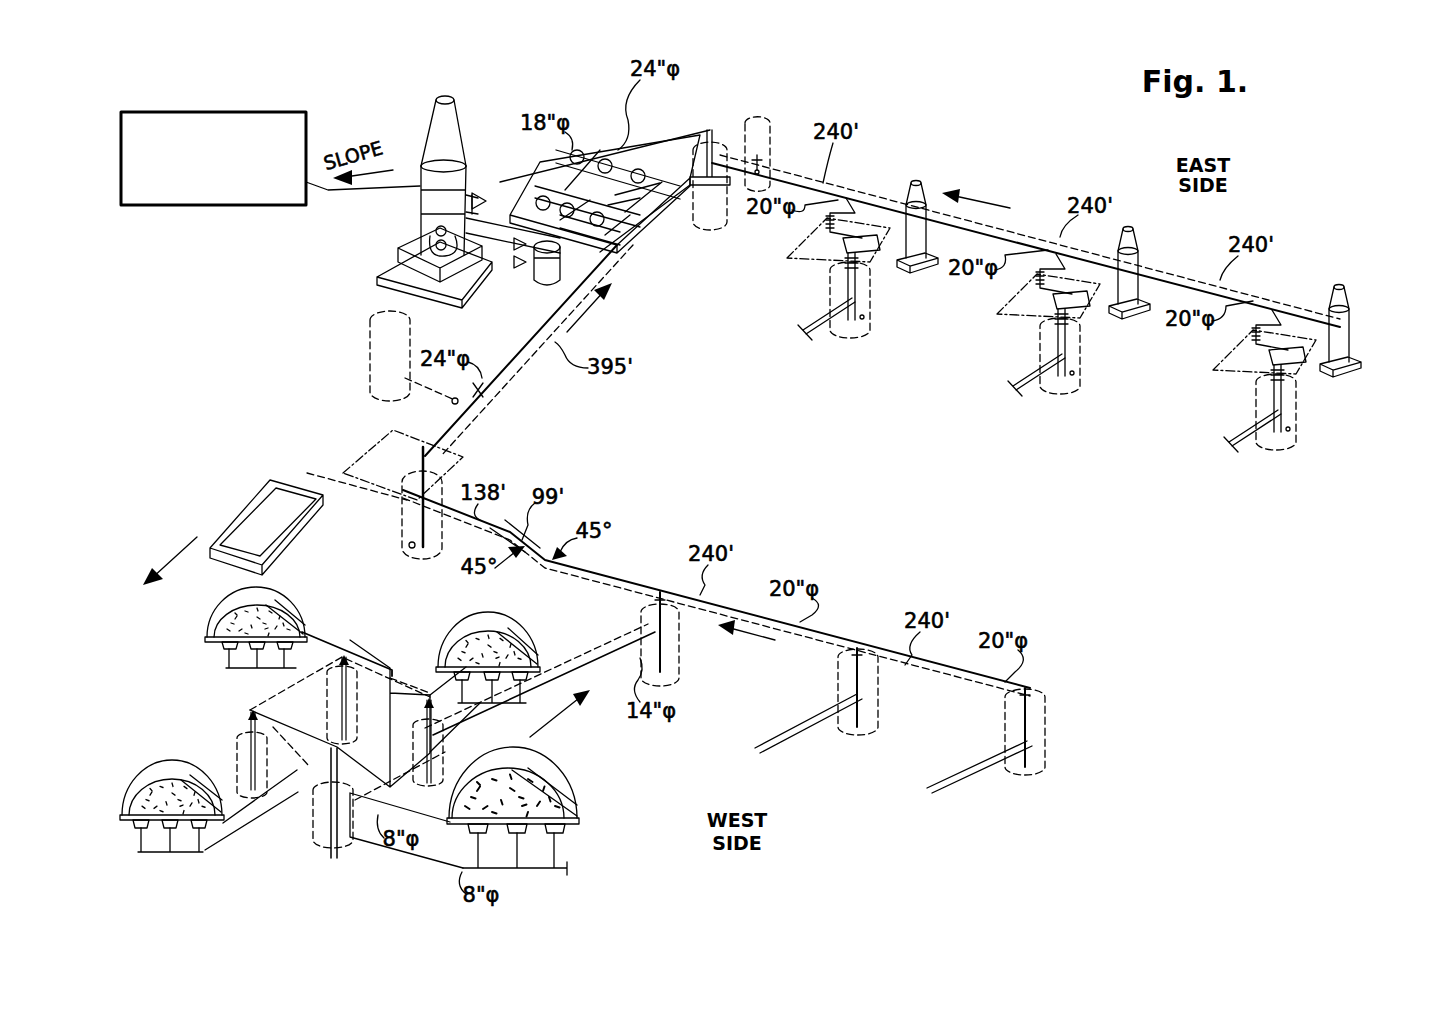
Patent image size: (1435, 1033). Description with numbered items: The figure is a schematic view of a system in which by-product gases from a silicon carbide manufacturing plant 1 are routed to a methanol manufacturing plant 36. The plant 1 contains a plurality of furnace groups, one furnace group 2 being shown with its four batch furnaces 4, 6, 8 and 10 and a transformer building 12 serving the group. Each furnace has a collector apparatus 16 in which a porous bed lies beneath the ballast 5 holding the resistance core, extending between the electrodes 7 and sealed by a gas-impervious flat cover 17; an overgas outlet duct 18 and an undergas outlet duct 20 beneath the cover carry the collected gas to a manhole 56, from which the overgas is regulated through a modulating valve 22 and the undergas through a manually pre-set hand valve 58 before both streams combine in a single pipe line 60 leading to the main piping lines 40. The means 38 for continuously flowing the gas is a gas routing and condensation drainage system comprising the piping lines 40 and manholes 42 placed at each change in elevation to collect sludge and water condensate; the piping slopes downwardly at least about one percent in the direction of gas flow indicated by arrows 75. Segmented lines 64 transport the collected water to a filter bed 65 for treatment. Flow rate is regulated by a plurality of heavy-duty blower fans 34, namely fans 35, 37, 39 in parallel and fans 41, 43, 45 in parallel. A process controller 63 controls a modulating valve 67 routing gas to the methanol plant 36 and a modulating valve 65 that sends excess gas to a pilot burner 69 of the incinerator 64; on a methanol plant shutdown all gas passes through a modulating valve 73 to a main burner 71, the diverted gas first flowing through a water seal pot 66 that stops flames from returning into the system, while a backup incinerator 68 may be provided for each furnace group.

The silicon carbide manufacturing plant 1 is at (300, 303).
The furnace group 2 is at (262, 885).
The furnace 4 is at (585, 845).
The ballast 5 is at (285, 595).
The furnace 6 is at (140, 855).
The electrodes 7 is at (230, 655).
The furnace 8 is at (190, 648).
The furnace 10 is at (560, 633).
The transformer building 12 is at (295, 818).
The collector apparatus 16 is at (290, 565).
The flat cover 17 is at (235, 597).
The overgas outlet duct 18 is at (328, 633).
The undergas outlet duct 20 is at (303, 668).
The modulating valve 22 is at (330, 765).
The blower fans 34 is at (610, 85).
The blower fan 35 is at (530, 188).
The methanol manufacturing plant 36 is at (232, 108).
The blower fan 37 is at (560, 232).
The gas routing and condensation drainage system 38 is at (775, 545).
The blower fan 39 is at (640, 240).
The piping lines 40 is at (525, 355).
The blower fan 41 is at (580, 150).
The manhole 42 is at (722, 225).
The blower fan 43 is at (615, 160).
The blower fan 45 is at (640, 182).
The manhole 56 is at (862, 345).
The hand valve 58 is at (648, 612).
The pipe line 60 is at (795, 735).
The process controller 63 is at (522, 262).
The incinerator 64 is at (432, 120).
The filter bed 65 is at (240, 503).
The water seal pot 66 is at (555, 292).
The modulating valve 67 is at (476, 198).
The backup incinerator 68 is at (925, 172).
The pilot burner 69 is at (412, 246).
The main burner 71 is at (428, 216).
The modulating valve 73 is at (520, 252).
The arrows 75 is at (1025, 210).